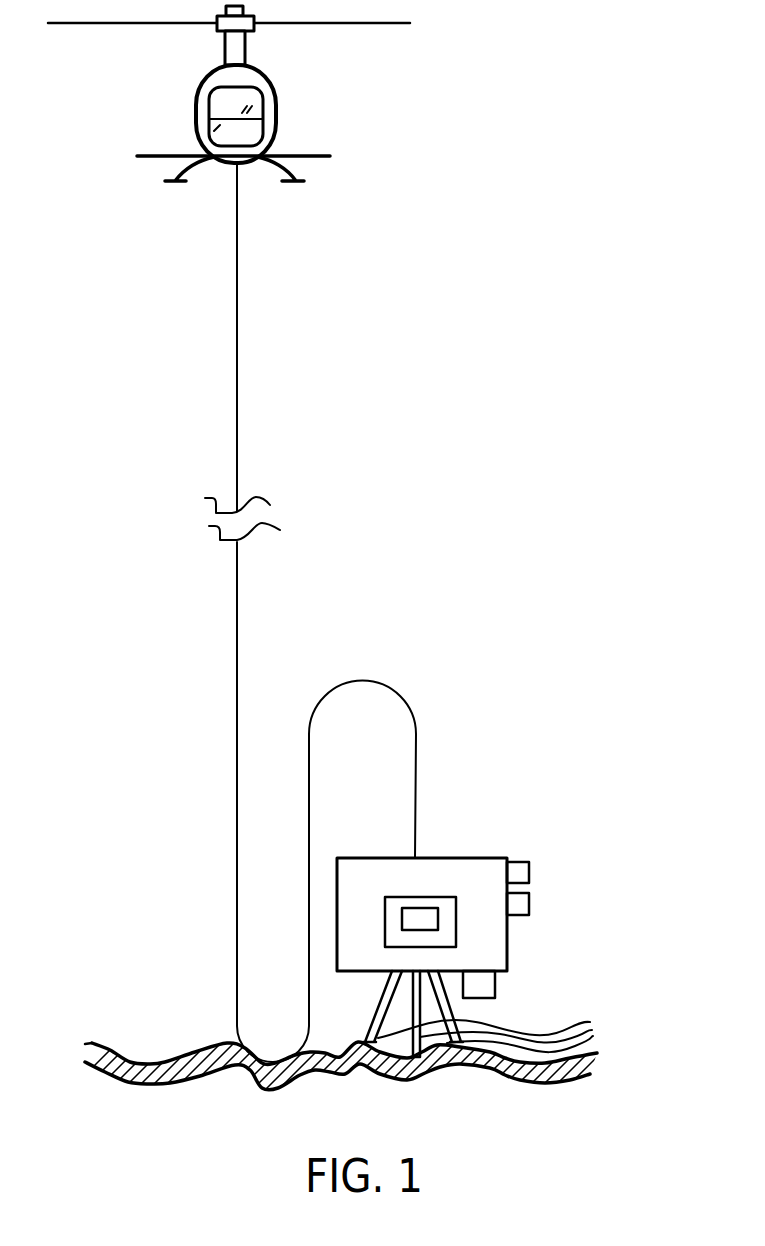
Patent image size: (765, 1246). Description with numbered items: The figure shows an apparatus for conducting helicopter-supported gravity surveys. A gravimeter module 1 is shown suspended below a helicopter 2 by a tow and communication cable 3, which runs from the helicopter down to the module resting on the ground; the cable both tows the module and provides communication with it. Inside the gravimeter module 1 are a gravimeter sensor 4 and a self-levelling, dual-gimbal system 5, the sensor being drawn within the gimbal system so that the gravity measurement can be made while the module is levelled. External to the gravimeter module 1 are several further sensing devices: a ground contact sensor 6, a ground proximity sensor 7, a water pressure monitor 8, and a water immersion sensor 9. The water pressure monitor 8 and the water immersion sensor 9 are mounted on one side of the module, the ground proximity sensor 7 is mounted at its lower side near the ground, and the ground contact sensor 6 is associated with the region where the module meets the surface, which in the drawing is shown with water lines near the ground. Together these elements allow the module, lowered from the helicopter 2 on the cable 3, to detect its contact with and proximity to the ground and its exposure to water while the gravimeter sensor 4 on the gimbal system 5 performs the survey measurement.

The gravimeter module 1 is at (479, 918).
The helicopter 2 is at (276, 83).
The tow and communication cable 3 is at (237, 268).
The gravimeter sensor 4 is at (420, 913).
The self-levelling, dual-gimbal system 5 is at (384, 917).
The ground contact sensor 6 is at (497, 1034).
The ground proximity sensor 7 is at (495, 985).
The water pressure monitor 8 is at (529, 872).
The water immersion sensor 9 is at (523, 899).